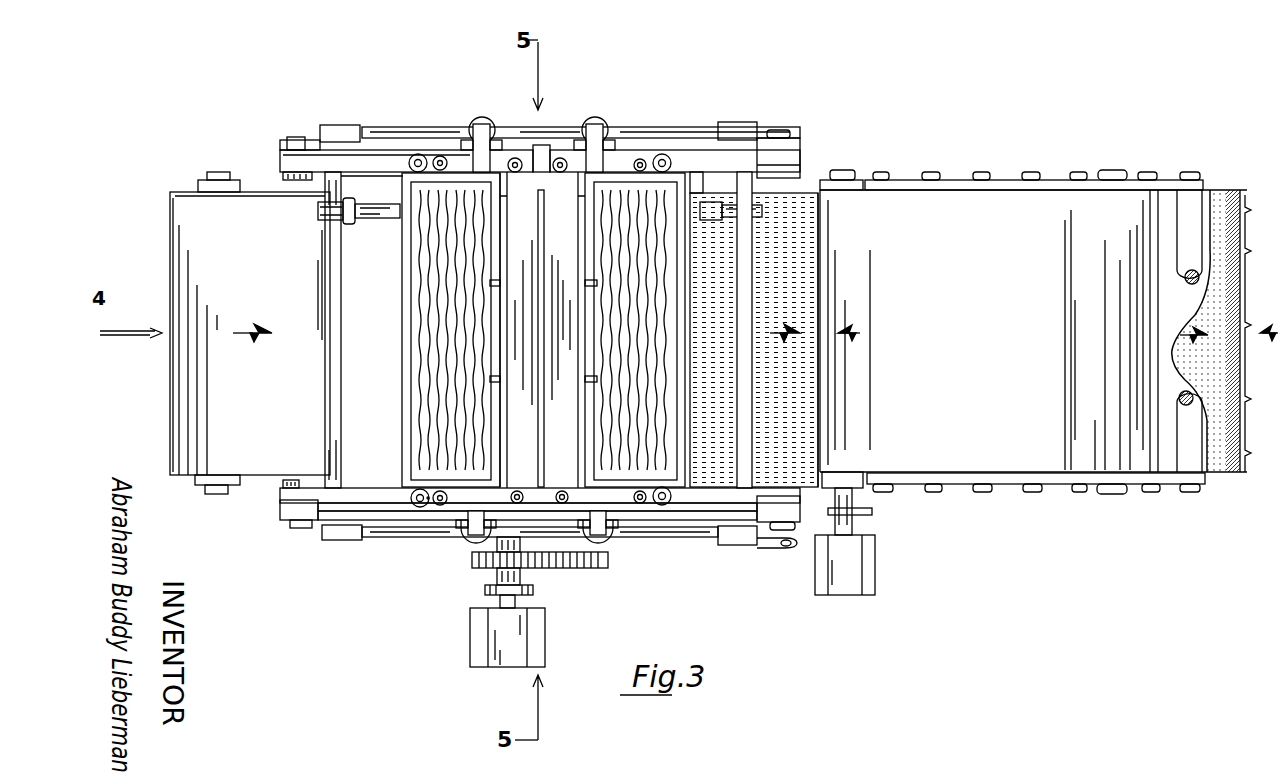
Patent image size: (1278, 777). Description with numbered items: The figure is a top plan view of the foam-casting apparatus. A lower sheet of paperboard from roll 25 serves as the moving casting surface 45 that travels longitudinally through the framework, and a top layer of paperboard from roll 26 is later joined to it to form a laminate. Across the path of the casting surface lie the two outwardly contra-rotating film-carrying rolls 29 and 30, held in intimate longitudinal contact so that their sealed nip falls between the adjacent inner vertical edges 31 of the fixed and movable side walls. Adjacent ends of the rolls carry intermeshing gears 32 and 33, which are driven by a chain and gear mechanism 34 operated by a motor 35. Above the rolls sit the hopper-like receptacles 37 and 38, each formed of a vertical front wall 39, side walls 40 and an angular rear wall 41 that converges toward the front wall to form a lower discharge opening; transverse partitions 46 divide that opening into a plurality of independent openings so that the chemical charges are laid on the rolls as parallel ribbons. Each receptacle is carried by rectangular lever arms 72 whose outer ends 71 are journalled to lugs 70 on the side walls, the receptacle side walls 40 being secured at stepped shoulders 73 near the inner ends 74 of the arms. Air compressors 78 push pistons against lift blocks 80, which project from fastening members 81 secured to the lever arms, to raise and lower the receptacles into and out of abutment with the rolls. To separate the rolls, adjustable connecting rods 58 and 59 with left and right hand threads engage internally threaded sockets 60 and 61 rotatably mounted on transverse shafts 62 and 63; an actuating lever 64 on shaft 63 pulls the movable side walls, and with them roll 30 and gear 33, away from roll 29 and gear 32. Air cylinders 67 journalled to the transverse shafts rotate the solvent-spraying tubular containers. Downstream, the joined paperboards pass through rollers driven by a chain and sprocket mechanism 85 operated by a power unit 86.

The roll of paperboard 25 is at (170, 412).
The roll of paperboard 26 is at (946, 205).
The contra-rotating film-carrying roll 29 is at (535, 440).
The contra-rotating film-carrying roll 30 is at (578, 425).
The inner vertical edges 31 is at (531, 166).
The intermeshing gear 32 is at (490, 562).
The intermeshing gear 33 is at (580, 570).
The chain and gear mechanism 34 is at (485, 591).
The motor 35 is at (495, 636).
The receptacle 37 is at (440, 325).
The receptacle 38 is at (675, 155).
The vertical front wall 39 is at (505, 202).
The side walls 40 is at (616, 168).
The angular rear wall 41 is at (402, 385).
The casting surface 45 is at (270, 220).
The transverse partitions 46 is at (500, 283).
The adjustable connecting rod 58 is at (660, 548).
The adjustable connecting rod 59 is at (444, 132).
The internally threaded socket 60 is at (345, 129).
The internally threaded socket 61 is at (730, 122).
The transverse shaft 62 is at (326, 295).
The transverse shaft 63 is at (745, 257).
The actuating lever 64 is at (781, 550).
The air cylinder 67 is at (378, 218).
The lug 70 is at (303, 500).
The outer end of lever arm 71 is at (283, 492).
The lever arm 72 is at (370, 158).
The stepped shoulder 73 is at (474, 164).
The inner end of lever arm 74 is at (576, 160).
The air compressor 78 is at (598, 125).
The lift block 80 is at (600, 140).
The fastening member 81 is at (620, 150).
The chain and sprocket mechanism 85 is at (870, 510).
The power unit 86 is at (865, 564).